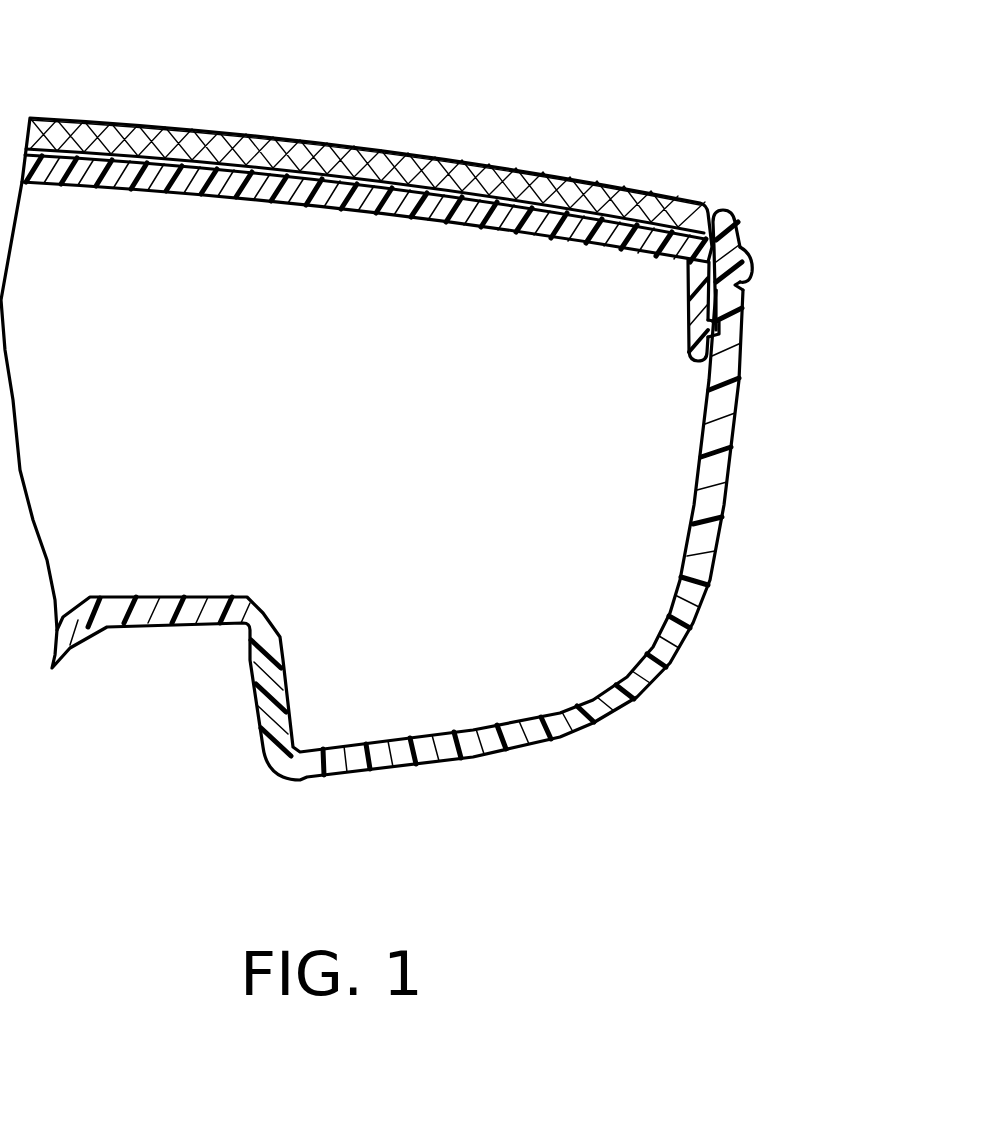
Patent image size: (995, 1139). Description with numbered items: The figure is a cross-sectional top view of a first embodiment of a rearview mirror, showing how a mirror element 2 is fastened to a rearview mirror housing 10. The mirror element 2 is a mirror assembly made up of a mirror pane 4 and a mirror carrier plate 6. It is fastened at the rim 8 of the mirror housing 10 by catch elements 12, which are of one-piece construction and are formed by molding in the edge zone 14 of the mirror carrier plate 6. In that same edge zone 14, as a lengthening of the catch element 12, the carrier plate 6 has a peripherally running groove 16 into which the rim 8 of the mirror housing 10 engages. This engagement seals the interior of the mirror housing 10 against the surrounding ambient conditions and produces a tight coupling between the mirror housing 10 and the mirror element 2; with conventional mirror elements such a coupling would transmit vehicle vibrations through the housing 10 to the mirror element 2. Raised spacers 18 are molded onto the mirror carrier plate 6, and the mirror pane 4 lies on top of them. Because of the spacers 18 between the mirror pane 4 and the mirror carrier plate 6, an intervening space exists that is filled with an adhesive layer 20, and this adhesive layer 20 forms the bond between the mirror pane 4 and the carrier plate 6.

The mirror element 2 is at (492, 158).
The mirror pane 4 is at (640, 186).
The mirror carrier plate 6 is at (453, 219).
The rim 8 is at (745, 288).
The rearview mirror housing 10 is at (724, 505).
The catch element 12 is at (688, 340).
The edge zone 14 is at (635, 268).
The peripherally running groove 16 is at (736, 222).
The raised spacers 18 is at (283, 147).
The adhesive layer 20 is at (293, 183).